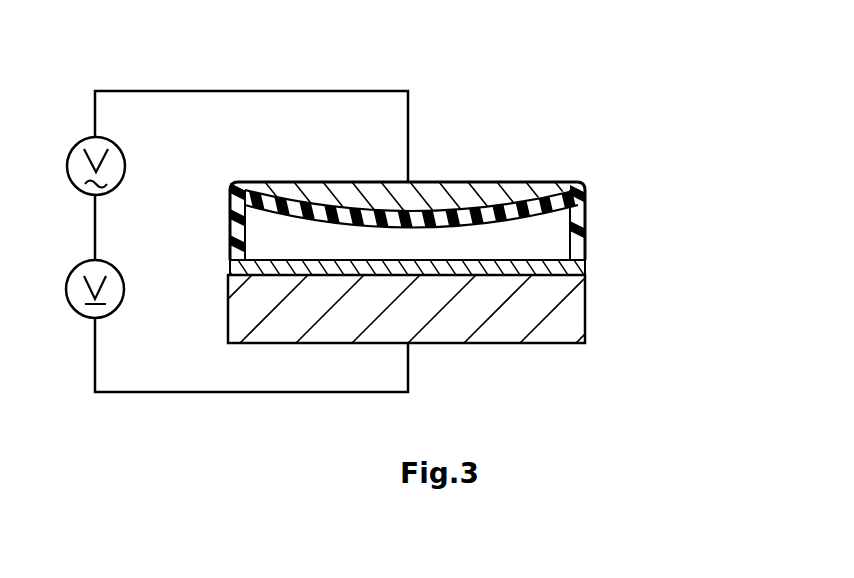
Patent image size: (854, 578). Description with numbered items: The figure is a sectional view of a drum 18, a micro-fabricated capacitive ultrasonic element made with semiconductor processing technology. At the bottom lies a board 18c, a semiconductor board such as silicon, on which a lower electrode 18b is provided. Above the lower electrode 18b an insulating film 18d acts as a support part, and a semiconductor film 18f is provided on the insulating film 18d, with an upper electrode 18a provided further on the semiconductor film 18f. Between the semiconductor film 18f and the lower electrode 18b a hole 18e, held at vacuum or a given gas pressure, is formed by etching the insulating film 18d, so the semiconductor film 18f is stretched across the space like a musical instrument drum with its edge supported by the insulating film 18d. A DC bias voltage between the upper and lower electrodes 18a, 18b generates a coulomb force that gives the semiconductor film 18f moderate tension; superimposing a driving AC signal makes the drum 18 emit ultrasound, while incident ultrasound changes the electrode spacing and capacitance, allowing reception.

The drum 18 is at (489, 37).
The upper electrode 18a is at (350, 199).
The lower electrode 18b is at (497, 267).
The board 18c is at (573, 313).
The insulating film 18d is at (588, 203).
The hole 18e is at (553, 233).
The semiconductor film 18f is at (457, 199).